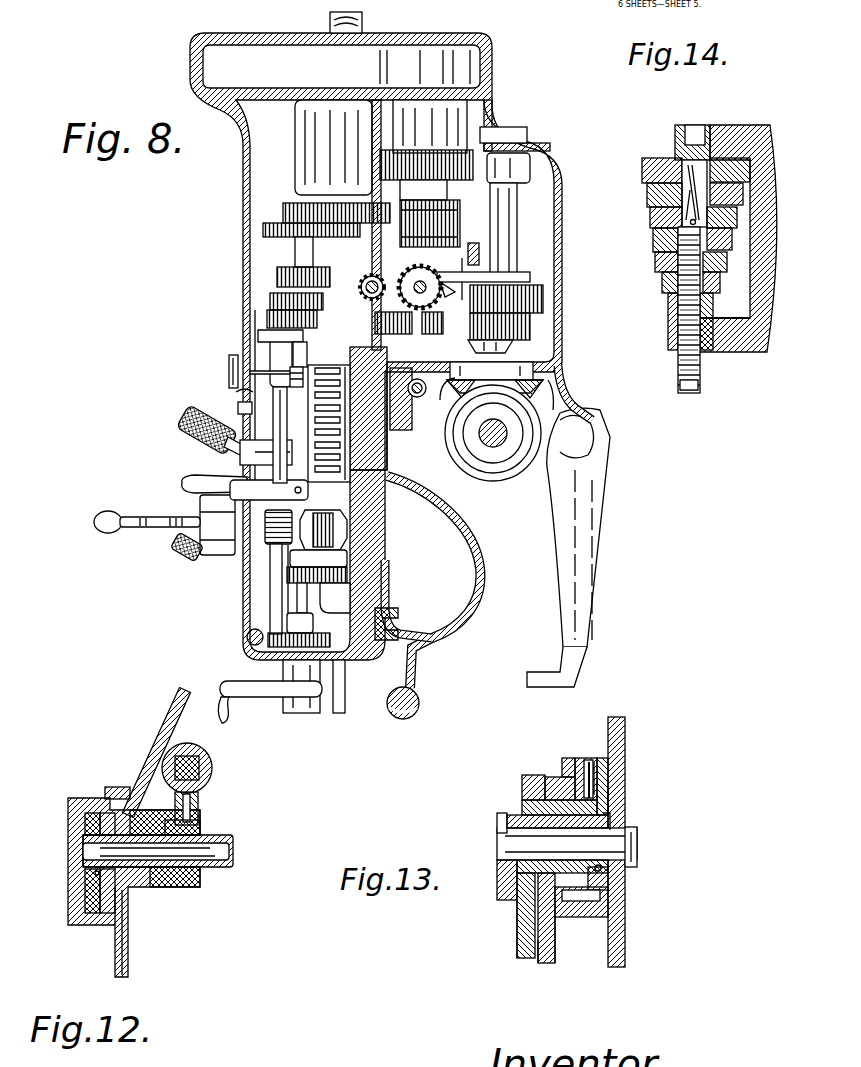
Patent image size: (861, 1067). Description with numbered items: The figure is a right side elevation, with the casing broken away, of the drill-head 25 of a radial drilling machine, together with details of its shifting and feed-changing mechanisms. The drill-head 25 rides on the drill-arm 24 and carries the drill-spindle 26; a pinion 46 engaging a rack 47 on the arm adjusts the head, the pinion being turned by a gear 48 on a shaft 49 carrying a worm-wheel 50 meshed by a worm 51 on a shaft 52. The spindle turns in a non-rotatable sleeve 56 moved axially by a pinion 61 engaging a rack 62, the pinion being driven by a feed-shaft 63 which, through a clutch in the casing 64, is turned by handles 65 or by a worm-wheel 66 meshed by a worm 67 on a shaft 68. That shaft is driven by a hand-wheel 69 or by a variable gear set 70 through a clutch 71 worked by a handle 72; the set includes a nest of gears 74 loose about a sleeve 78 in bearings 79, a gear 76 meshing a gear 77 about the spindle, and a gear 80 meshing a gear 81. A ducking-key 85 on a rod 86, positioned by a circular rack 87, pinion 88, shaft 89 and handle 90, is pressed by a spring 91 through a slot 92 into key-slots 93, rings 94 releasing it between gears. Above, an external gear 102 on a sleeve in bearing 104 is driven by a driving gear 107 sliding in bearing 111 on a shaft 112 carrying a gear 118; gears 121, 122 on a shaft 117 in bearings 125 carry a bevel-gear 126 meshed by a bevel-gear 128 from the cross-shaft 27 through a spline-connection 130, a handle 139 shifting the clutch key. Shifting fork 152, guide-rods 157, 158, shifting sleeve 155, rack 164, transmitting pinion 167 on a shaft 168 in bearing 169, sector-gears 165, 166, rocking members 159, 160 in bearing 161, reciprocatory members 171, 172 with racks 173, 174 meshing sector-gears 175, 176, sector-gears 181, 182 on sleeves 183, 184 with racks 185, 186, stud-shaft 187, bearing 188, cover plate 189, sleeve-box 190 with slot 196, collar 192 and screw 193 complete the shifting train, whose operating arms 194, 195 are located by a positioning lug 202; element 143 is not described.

In FIG. 8, the external gear 102 is at (203, 57).
In FIG. 8, the bearing 104 is at (303, 153).
In FIG. 8, the bearing 169 is at (378, 190).
In FIG. 8, the bearing 111 is at (447, 130).
In FIG. 8, the driving gear 107 is at (493, 167).
In FIG. 8, the guide-rod 158 is at (447, 213).
In FIG. 8, the shaft 112 is at (462, 216).
In FIG. 8, the shaft 117 is at (517, 237).
In FIG. 8, the rack 164 is at (455, 250).
In FIG. 8, the gear 118 is at (478, 253).
In FIG. 14, the gear 118 is at (680, 243).
In FIG. 8, the shifting fork 152 is at (517, 277).
In FIG. 8, the transmitting pinion 167 is at (450, 283).
In FIG. 8, the gear 121 is at (547, 303).
In FIG. 8, the gear 122 is at (530, 327).
In FIG. 8, the bearing 125 is at (520, 373).
In FIG. 8, the bevel-gear 126 is at (540, 387).
In FIG. 8, the bevel-gear 128 is at (540, 413).
In FIG. 8, the cross-shaft 27 is at (510, 433).
In FIG. 8, the spline-connection 130 is at (585, 443).
In FIG. 8, the arm 143 is at (575, 452).
In FIG. 8, the operating handle 139 is at (530, 673).
In FIG. 8, the drill-arm 24 is at (465, 634).
In FIG. 8, the drill-head 25 is at (240, 262).
In FIG. 12, the drill-head 25 is at (137, 750).
In FIG. 8, the positioning lug 202 is at (283, 210).
In FIG. 8, the gear 76 is at (263, 228).
In FIG. 8, the gear 77 is at (295, 245).
In FIG. 8, the bearing 79 is at (295, 257).
In FIG. 14, the bearing 79 is at (677, 127).
In FIG. 8, the nest of gears 74 is at (273, 290).
In FIG. 14, the nest of gears 74 is at (665, 290).
In FIG. 8, the sector-gear 166 is at (364, 272).
In FIG. 8, the gear 80 is at (366, 287).
In FIG. 14, the gear 80 is at (680, 293).
In FIG. 8, the rocking member 160 is at (398, 296).
In FIG. 12, the rocking member 160 is at (218, 862).
In FIG. 8, the shaft 168 is at (380, 332).
In FIG. 8, the variable gear set 70 is at (258, 336).
In FIG. 14, the variable gear set 70 is at (660, 262).
In FIG. 8, the gear 81 is at (293, 350).
In FIG. 8, the shaft 89 is at (262, 365).
In FIG. 8, the handle 90 is at (229, 367).
In FIG. 8, the sleeve 56 is at (240, 390).
In FIG. 8, the rack 62 is at (243, 410).
In FIG. 8, the operating arm 194 is at (180, 422).
In FIG. 13, the operating arm 194 is at (515, 915).
In FIG. 8, the shaft 68 is at (240, 455).
In FIG. 8, the handle 72 is at (182, 484).
In FIG. 8, the clutch 71 is at (205, 504).
In FIG. 8, the handles 65 is at (147, 528).
In FIG. 8, the operating arm 195 is at (183, 556).
In FIG. 13, the operating arm 195 is at (543, 955).
In FIG. 8, the pinion 61 is at (323, 513).
In FIG. 8, the worm 67 is at (265, 545).
In FIG. 8, the feed-shaft 63 is at (347, 525).
In FIG. 8, the casing 64 is at (270, 570).
In FIG. 8, the worm-wheel 66 is at (287, 595).
In FIG. 8, the pinion 46 is at (350, 570).
In FIG. 8, the rack 47 is at (386, 620).
In FIG. 8, the gear 48 is at (297, 600).
In FIG. 8, the shaft 52 is at (300, 645).
In FIG. 8, the shaft 49 is at (248, 640).
In FIG. 8, the worm 51 is at (268, 645).
In FIG. 8, the worm-wheel 50 is at (346, 688).
In FIG. 8, the drill-spindle 26 is at (307, 708).
In FIG. 8, the hand-wheel 69 is at (248, 697).
In FIG. 8, the circular toothed rack 87 is at (278, 400).
In FIG. 14, the circular toothed rack 87 is at (692, 377).
In FIG. 8, the pinion 88 is at (332, 366).
In FIG. 14, the key-slots 93 is at (723, 263).
In FIG. 14, the rings 94 is at (717, 287).
In FIG. 14, the ducking-key 85 is at (678, 155).
In FIG. 14, the spring 91 is at (700, 167).
In FIG. 14, the slot 92 is at (710, 195).
In FIG. 14, the rod 86 is at (707, 217).
In FIG. 14, the sleeve 78 is at (680, 352).
In FIG. 12, the reciprocatory member 171 is at (80, 900).
In FIG. 13, the reciprocatory member 171 is at (590, 760).
In FIG. 12, the rack 173 is at (80, 893).
In FIG. 12, the sector-gear 175 is at (100, 873).
In FIG. 12, the sector-gear 176 is at (97, 870).
In FIG. 12, the reciprocatory member 172 is at (110, 905).
In FIG. 13, the reciprocatory member 172 is at (625, 760).
In FIG. 12, the rack 174 is at (143, 893).
In FIG. 12, the rocking member 159 is at (157, 873).
In FIG. 12, the bearing 161 is at (157, 880).
In FIG. 12, the guide-rod 157 is at (207, 767).
In FIG. 12, the shifting sleeve 155 is at (212, 780).
In FIG. 12, the sector-gear 165 is at (197, 807).
In FIG. 13, the stud-shaft 187 is at (515, 848).
In FIG. 13, the bearing 188 is at (500, 828).
In FIG. 13, the sleeve 183 is at (520, 805).
In FIG. 13, the cover plate 189 is at (520, 780).
In FIG. 13, the sector-gear 181 is at (555, 790).
In FIG. 13, the rack 185 is at (578, 770).
In FIG. 13, the sleeve-box 190 is at (598, 760).
In FIG. 13, the rack 186 is at (620, 780).
In FIG. 13, the sector-gear 182 is at (615, 800).
In FIG. 13, the collar 192 is at (600, 888).
In FIG. 13, the screw 193 is at (600, 870).
In FIG. 13, the sleeve 184 is at (575, 905).
In FIG. 13, the slot 196 is at (560, 940).